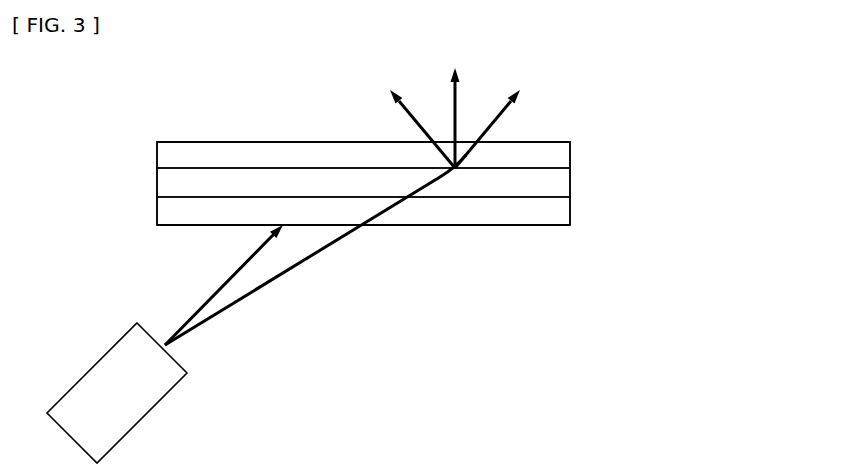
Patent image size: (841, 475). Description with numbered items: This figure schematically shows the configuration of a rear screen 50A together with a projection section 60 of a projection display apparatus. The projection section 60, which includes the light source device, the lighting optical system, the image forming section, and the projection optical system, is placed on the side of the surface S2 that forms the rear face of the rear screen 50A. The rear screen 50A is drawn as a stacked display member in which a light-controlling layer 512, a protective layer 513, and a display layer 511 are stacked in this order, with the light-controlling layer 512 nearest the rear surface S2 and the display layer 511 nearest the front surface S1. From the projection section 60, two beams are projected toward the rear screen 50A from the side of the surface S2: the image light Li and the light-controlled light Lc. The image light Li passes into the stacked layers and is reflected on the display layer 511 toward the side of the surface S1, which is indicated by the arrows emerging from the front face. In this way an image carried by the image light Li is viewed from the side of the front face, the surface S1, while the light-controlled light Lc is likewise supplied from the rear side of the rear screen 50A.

The rear screen 50A is at (610, 110).
The display layer 511 is at (562, 155).
The protective layer 513 is at (562, 183).
The light-controlling layer 512 is at (562, 212).
The surface S1 is at (548, 132).
The surface S2 is at (538, 233).
The light-controlled light Lc is at (222, 285).
The image light Li is at (275, 282).
The projection section 60 is at (145, 418).